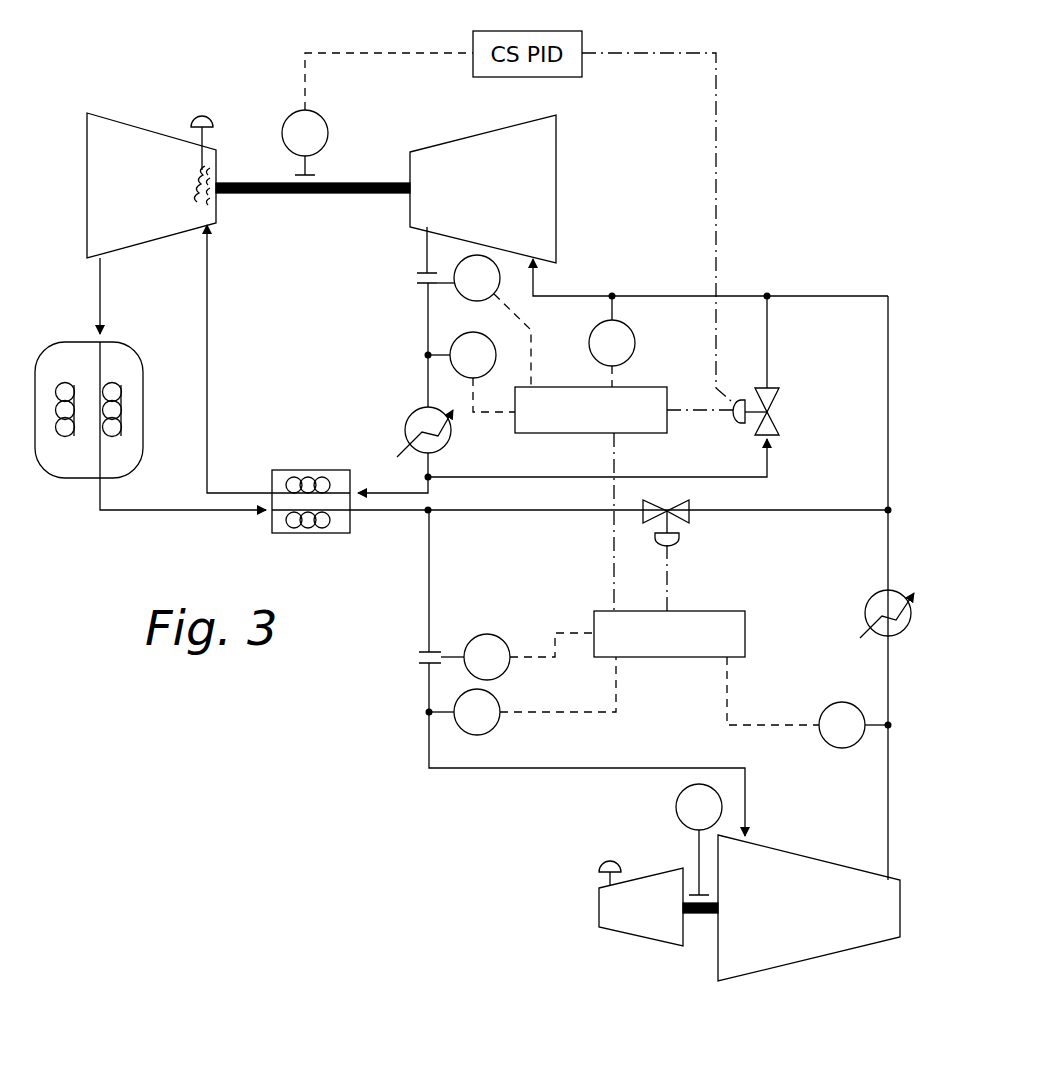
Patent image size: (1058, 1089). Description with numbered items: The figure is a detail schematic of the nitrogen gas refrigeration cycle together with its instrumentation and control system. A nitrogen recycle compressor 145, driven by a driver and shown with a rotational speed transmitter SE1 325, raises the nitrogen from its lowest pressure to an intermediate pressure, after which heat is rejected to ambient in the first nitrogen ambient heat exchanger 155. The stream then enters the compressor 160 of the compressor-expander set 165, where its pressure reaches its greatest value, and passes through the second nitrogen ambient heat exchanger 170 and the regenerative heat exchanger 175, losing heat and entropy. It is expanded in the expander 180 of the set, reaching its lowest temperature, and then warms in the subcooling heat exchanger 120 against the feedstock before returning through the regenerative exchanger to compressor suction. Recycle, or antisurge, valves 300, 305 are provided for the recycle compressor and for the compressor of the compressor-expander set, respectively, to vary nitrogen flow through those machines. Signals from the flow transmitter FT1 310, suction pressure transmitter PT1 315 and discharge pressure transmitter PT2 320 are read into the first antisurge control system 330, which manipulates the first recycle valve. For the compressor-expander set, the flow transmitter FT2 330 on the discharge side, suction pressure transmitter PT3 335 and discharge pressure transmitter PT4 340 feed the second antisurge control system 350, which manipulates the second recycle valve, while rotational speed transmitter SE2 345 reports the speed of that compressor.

The subcooling heat exchanger 120 is at (130, 380).
The nitrogen recycle compressor 145 is at (802, 880).
The first nitrogen ambient heat exchanger 155 is at (871, 600).
The compressor 160 is at (548, 243).
The compressor-expander set 165 is at (598, 161).
The second nitrogen ambient heat exchanger 170 is at (448, 425).
The regenerative heat exchanger 175 is at (337, 527).
The expander 180 is at (90, 243).
The first recycle valve 300 is at (677, 518).
The second recycle valve 305 is at (772, 398).
The flow transmitter FT1 310 is at (487, 636).
The suction pressure transmitter PT1 315 is at (493, 729).
The discharge pressure transmitter PT2 320 is at (845, 704).
The rotational speed transmitter SE1 325 is at (676, 794).
The antisurge control system A/S PID 01 / flow transmitter FT2 330 is at (462, 297).
The suction pressure transmitter PT3 335 is at (623, 357).
The discharge pressure transmitter PT4 340 is at (455, 364).
The rotational speed transmitter SE2 345 is at (320, 120).
The antisurge control system A/S PID 02 350 is at (632, 393).